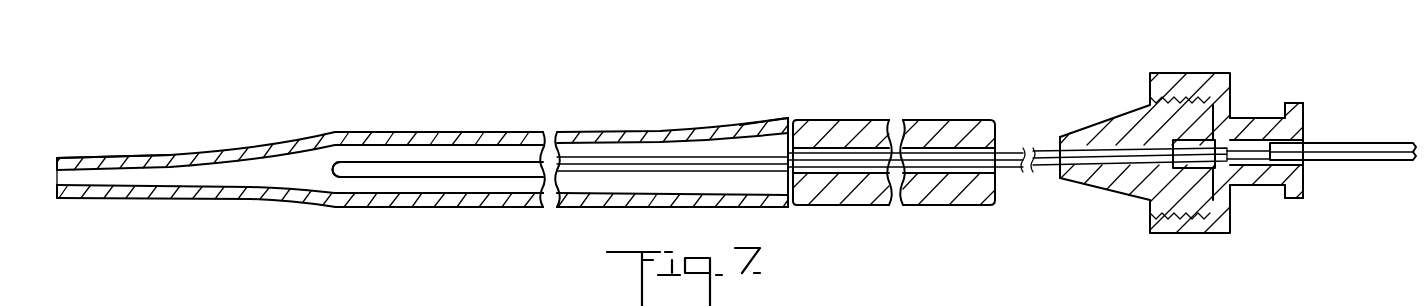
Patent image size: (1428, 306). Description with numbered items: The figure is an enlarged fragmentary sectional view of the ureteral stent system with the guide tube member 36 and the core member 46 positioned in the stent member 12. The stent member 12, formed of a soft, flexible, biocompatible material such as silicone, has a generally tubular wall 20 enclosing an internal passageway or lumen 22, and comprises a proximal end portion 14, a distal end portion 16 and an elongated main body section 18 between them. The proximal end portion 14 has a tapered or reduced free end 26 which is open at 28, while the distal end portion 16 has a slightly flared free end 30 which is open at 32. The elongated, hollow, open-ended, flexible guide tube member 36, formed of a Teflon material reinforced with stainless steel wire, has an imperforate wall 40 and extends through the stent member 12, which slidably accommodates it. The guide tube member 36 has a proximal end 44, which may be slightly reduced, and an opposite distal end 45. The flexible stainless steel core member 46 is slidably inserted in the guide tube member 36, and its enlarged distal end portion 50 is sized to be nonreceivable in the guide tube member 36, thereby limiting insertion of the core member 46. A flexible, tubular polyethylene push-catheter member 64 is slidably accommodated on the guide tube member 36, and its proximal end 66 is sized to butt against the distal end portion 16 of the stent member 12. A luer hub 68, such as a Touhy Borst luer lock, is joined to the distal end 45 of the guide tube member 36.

The stent member 12 is at (472, 125).
The proximal end portion 14 is at (377, 131).
The distal end portion 16 is at (683, 129).
The main body section 18 is at (522, 210).
The tubular wall 20 is at (412, 208).
The internal passageway or lumen 22 is at (485, 188).
The tapered free end 26 is at (183, 153).
The opening 28 is at (55, 177).
The flared free end 30 is at (762, 117).
The opening 32 is at (780, 197).
The guide tube member 36 is at (591, 156).
The imperforate wall 40 is at (506, 160).
The proximal end 44 is at (347, 183).
The distal end 45 is at (1232, 115).
The core member 46 is at (1257, 168).
The enlarged distal end portion 50 is at (1359, 162).
The push-catheter member 64 is at (882, 113).
The proximal end 66 is at (807, 125).
The luer hub 68 is at (1200, 64).